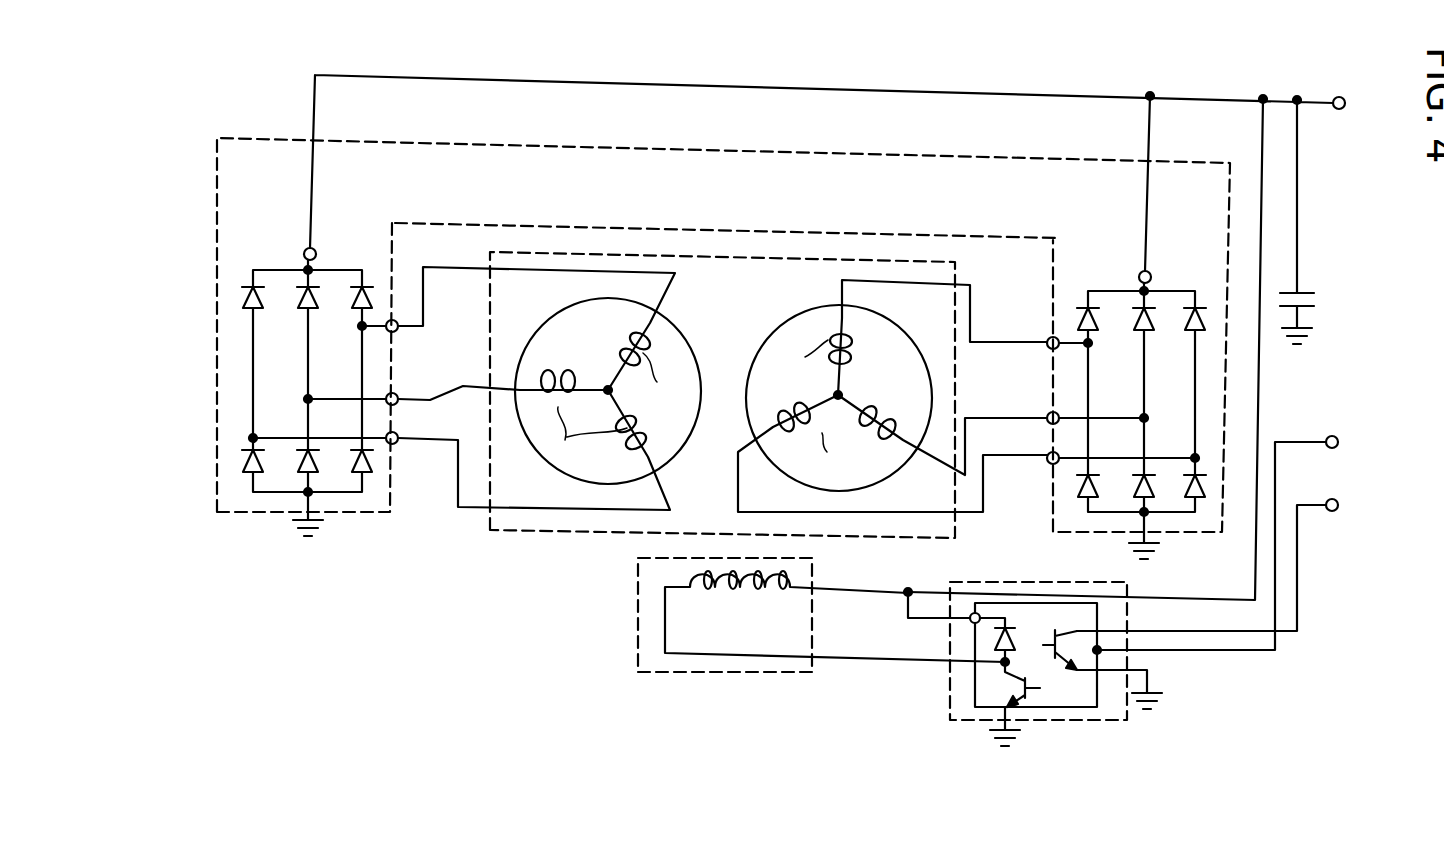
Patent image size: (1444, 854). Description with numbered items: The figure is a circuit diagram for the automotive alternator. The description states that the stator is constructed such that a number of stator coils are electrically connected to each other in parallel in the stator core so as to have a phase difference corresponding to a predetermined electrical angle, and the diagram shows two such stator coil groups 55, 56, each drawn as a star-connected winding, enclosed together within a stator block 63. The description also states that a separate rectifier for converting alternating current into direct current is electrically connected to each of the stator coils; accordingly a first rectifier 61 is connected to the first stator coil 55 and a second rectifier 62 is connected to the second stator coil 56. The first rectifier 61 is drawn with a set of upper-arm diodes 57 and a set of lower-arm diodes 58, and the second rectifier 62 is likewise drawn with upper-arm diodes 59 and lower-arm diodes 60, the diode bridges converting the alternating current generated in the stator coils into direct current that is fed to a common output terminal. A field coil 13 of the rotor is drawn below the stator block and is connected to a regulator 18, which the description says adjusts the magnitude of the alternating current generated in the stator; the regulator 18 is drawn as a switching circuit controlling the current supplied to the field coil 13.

The field coil 13 is at (660, 672).
The regulator 18 is at (1085, 722).
The first armature winding (Y1) 55 is at (610, 308).
The second armature winding (Y2) 56 is at (825, 315).
The upper-arm diodes of first rectifier 57 is at (373, 300).
The lower-arm diodes of first rectifier 58 is at (364, 474).
The upper-arm diodes of second rectifier 59 is at (1197, 325).
The lower-arm diodes of second rectifier 60 is at (1195, 500).
The first rectifier circuit 61 is at (284, 392).
The second rectifier circuit 62 is at (1158, 407).
The generator-motor unit 63 is at (523, 530).